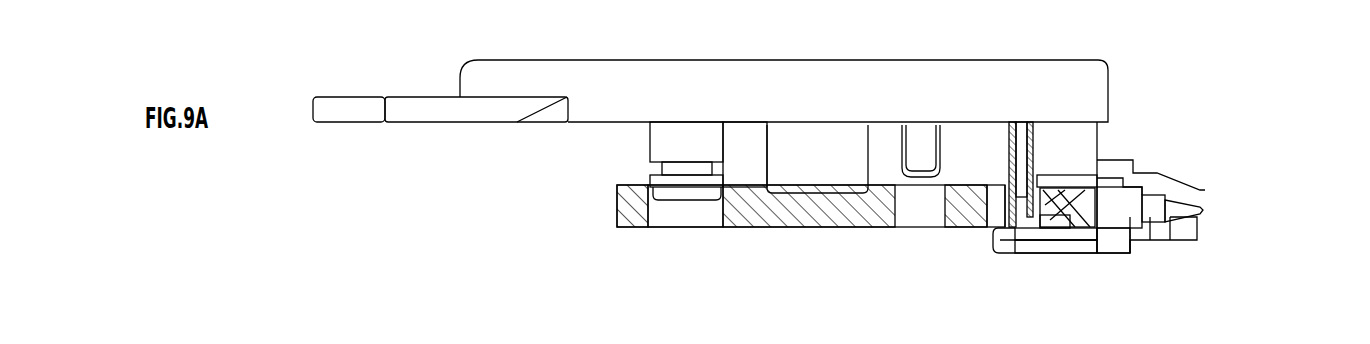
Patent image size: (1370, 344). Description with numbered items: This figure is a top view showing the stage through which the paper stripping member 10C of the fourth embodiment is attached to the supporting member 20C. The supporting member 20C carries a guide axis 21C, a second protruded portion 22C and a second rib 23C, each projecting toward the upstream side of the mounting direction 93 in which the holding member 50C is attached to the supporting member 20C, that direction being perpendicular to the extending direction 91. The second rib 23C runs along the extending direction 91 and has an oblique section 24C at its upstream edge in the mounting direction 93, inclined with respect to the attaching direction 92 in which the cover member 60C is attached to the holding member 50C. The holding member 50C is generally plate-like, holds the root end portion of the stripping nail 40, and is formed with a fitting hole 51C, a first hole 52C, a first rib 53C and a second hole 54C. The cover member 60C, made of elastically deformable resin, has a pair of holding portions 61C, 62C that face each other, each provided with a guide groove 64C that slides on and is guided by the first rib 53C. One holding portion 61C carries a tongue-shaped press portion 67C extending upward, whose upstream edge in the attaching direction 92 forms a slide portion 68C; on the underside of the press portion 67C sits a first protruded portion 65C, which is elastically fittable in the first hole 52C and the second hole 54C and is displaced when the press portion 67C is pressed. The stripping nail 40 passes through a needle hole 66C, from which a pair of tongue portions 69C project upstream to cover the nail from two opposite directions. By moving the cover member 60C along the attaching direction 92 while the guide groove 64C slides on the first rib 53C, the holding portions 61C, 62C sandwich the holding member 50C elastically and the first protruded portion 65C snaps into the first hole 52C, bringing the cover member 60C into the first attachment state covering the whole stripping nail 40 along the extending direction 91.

The liquid ejection head unit 10C is at (617, 203).
The supporting member 20C is at (465, 68).
The guide axis 21C is at (650, 140).
The second protruded portion 22C is at (1018, 150).
The second rib 23C is at (1090, 135).
The oblique section 24C is at (1057, 253).
The stripping nail 40 is at (1203, 208).
The holding member 50C is at (782, 228).
The fitting hole 51C is at (672, 218).
The first hole 52C is at (1030, 195).
The first rib 53C is at (1095, 150).
The second hole 54C is at (993, 218).
The cover member 60C is at (1182, 245).
The holding portion 61C is at (1003, 245).
The holding portion 62C is at (1112, 160).
The guide groove 64C is at (1117, 233).
The first protruded portion 65C is at (1045, 190).
The needle hole 66C is at (1157, 220).
The press portion 67C is at (1017, 250).
The slide portion 68C is at (1018, 255).
The tongue portions 69C is at (1202, 237).
The extending direction 91 is at (1353, 263).
The attaching direction 92 is at (1365, 208).
The mounting direction 93 is at (1295, 123).